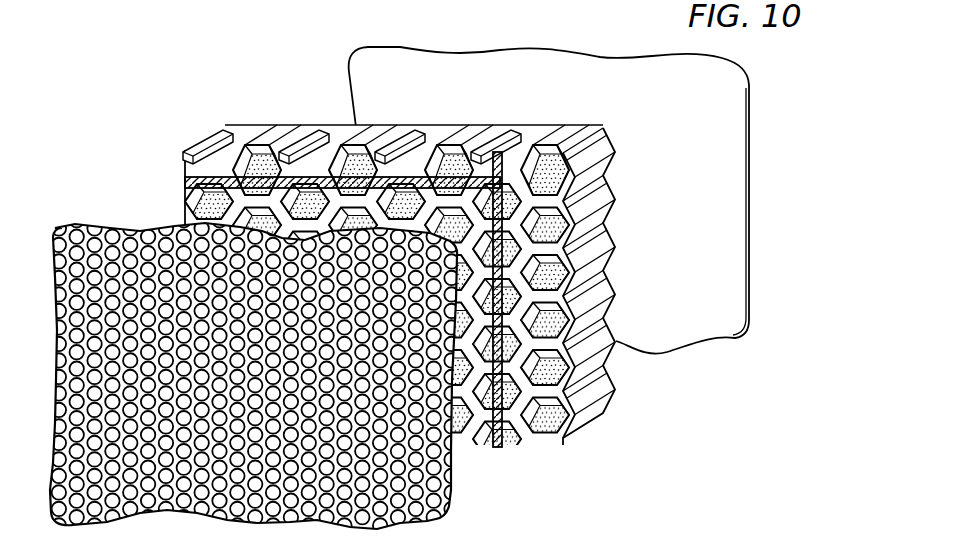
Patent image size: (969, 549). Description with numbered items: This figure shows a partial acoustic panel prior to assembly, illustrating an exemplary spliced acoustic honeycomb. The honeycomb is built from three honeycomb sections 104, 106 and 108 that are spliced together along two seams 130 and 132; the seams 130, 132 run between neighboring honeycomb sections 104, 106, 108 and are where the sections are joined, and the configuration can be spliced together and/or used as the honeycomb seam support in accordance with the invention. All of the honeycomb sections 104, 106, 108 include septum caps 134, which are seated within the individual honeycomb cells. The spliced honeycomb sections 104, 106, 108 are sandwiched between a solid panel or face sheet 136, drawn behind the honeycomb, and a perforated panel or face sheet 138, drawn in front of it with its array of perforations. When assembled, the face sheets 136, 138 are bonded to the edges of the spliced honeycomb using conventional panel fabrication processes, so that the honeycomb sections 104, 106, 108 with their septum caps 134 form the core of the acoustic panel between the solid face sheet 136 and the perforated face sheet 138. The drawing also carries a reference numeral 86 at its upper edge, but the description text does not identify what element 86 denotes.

The acoustic panel 86 is at (208, 0).
The honeycomb section 104 is at (388, 269).
The honeycomb section 106 is at (318, 135).
The honeycomb section 108 is at (185, 212).
The seam 130 is at (404, 186).
The seam 132 is at (497, 447).
The septum cap 134 is at (558, 140).
The solid face sheet 136 is at (682, 323).
The perforated face sheet 138 is at (437, 497).